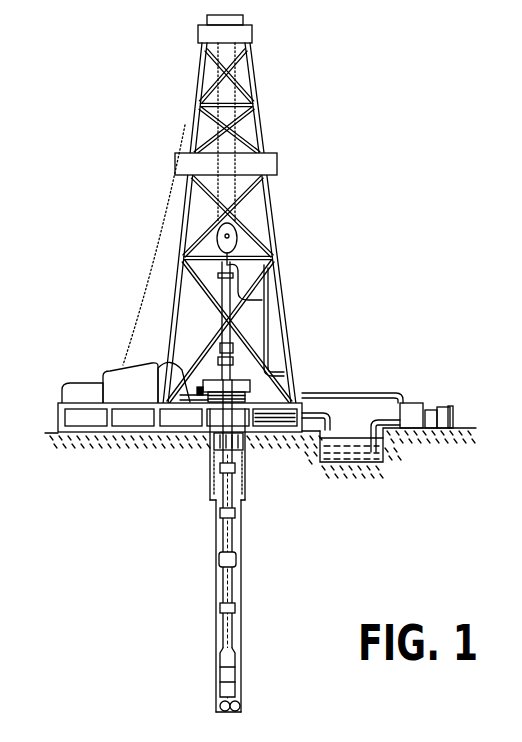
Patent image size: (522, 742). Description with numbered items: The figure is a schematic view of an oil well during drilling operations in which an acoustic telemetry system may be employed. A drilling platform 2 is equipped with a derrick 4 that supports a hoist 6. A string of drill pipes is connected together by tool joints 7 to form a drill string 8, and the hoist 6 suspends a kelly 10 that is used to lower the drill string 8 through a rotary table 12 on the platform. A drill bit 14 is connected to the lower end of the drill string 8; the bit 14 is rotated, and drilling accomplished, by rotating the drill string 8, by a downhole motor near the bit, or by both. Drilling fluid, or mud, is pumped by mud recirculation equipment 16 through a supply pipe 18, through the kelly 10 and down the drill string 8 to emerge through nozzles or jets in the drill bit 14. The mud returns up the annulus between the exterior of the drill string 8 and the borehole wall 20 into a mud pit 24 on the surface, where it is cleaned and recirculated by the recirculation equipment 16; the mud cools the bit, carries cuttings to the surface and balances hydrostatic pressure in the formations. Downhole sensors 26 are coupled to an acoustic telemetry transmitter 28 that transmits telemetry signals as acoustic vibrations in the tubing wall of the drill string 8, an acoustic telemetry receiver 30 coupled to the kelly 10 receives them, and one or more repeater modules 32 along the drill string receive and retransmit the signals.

The drilling platform 2 is at (60, 407).
The derrick 4 is at (262, 125).
The hoist 6 is at (235, 232).
The tool joints 7 is at (221, 511).
The drill string 8 is at (232, 540).
The kelly 10 is at (227, 292).
The rotary table 12 is at (246, 378).
The drill bit 14 is at (241, 702).
The mud recirculation equipment 16 is at (408, 407).
The supply pipe 18 is at (363, 393).
The borehole wall 20 is at (242, 545).
The mud pit 24 is at (335, 453).
The downhole sensors 26 is at (221, 678).
The acoustic telemetry transmitter 28 is at (221, 662).
The acoustic telemetry receiver 30 is at (233, 347).
The repeater modules 32 is at (219, 565).